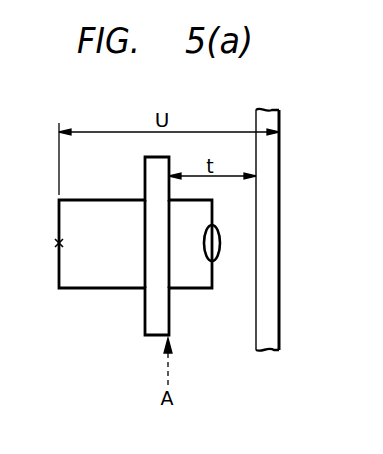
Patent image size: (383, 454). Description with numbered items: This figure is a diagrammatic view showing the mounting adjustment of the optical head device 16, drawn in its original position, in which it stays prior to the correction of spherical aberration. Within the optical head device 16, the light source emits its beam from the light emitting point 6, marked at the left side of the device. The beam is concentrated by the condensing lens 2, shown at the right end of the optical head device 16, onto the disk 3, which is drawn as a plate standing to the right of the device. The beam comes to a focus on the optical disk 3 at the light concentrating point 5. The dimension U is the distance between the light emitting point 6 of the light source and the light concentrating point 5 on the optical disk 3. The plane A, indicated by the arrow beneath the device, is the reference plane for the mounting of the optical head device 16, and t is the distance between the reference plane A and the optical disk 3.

The condensing lens 2 is at (218, 257).
The disk 3 is at (289, 230).
The light concentrating point 5 is at (279, 245).
The light emitting point 6 is at (58, 242).
The optical head device 16 is at (88, 289).